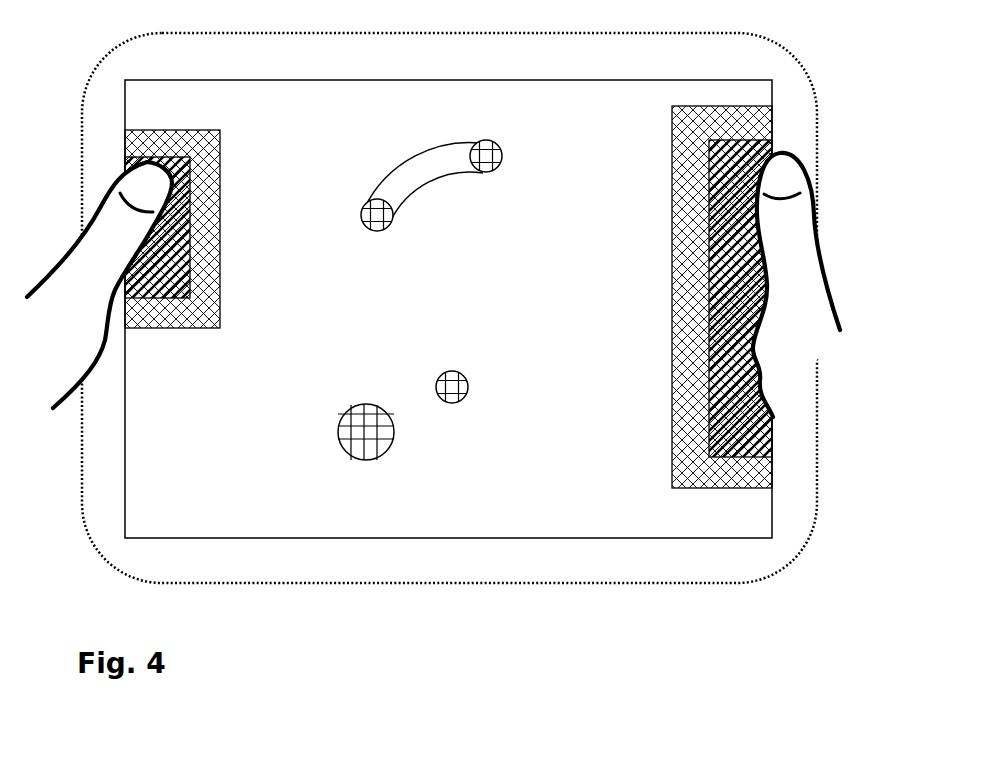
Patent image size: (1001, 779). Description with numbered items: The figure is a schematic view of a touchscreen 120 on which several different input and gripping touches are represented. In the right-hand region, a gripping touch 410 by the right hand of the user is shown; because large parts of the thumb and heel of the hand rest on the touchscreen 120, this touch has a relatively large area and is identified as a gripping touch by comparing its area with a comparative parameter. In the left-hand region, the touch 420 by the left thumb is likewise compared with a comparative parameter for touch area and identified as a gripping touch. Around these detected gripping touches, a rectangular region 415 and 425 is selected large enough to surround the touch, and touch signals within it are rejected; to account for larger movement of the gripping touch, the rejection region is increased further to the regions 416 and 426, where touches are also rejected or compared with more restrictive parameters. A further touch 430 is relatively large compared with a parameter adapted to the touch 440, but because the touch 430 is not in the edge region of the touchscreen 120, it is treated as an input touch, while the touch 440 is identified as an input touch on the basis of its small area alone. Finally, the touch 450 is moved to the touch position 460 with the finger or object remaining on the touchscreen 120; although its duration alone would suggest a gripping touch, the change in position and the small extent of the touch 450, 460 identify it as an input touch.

The touchscreen 120 is at (470, 517).
The gripping touch 410 is at (793, 183).
The rectangular region 415 is at (748, 148).
The region 416 is at (740, 121).
The touch 420 is at (114, 200).
The rectangular region 425 is at (127, 160).
The region 426 is at (142, 138).
The touch 430 is at (353, 446).
The touch 440 is at (475, 377).
The touch 450 is at (404, 199).
The touch position 460 is at (508, 147).